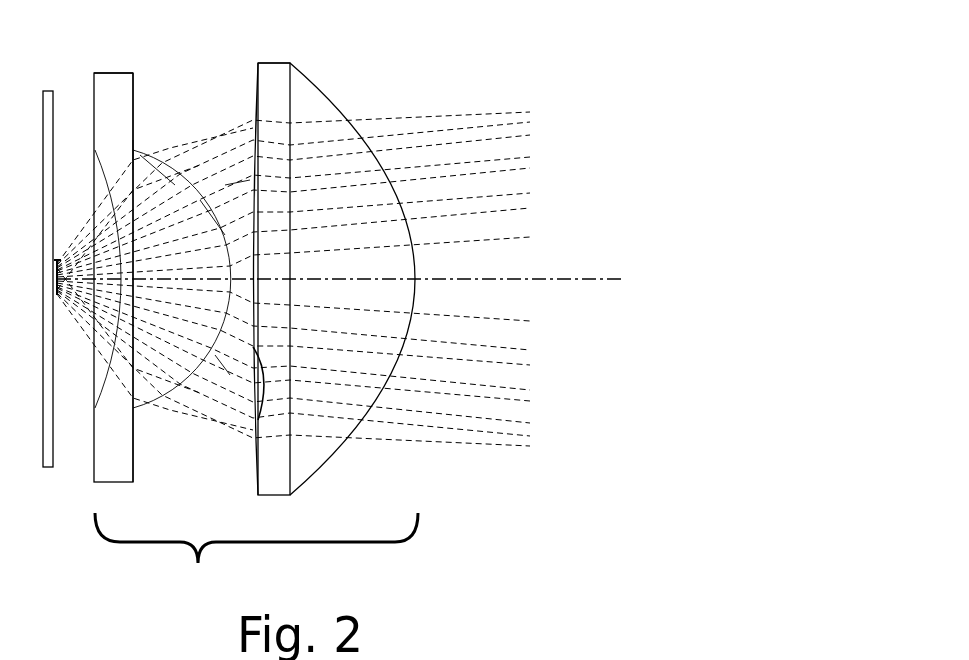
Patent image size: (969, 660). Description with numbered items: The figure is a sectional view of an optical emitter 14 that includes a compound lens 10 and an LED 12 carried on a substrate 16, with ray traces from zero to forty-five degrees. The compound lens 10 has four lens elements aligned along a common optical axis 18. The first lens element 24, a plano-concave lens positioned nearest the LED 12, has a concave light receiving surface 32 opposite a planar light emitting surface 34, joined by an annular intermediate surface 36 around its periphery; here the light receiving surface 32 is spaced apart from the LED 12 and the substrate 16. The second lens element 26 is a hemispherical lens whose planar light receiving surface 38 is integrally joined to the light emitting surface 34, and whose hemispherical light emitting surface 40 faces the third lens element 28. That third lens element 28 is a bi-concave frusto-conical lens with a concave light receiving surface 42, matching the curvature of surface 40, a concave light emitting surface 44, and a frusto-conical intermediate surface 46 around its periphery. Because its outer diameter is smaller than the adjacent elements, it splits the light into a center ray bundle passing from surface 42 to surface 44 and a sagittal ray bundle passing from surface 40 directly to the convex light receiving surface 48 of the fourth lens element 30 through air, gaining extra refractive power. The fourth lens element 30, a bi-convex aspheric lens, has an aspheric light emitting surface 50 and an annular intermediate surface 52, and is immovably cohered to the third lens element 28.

The compound lens 10 is at (256, 553).
The LED 12 is at (55, 297).
The optical emitter 14 is at (483, 53).
The substrate 16 is at (52, 445).
The optical axis 18 is at (566, 278).
The first lens element 24 is at (120, 483).
The second lens element 26 is at (153, 403).
The third lens element 28 is at (222, 362).
The fourth lens element 30 is at (272, 497).
The light receiving surface 32 is at (100, 182).
The light emitting surface 34 is at (133, 110).
The annular intermediate surface 36 is at (110, 73).
The light receiving surface 38 is at (132, 168).
The light emitting surface 40 is at (163, 167).
The light receiving surface 42 is at (217, 222).
The light emitting surface 44 is at (258, 418).
The frusto-conical intermediate surface 46 is at (237, 185).
The light receiving surface 48 is at (258, 85).
The light emitting surface 50 is at (320, 88).
The annular intermediate surface 52 is at (280, 62).